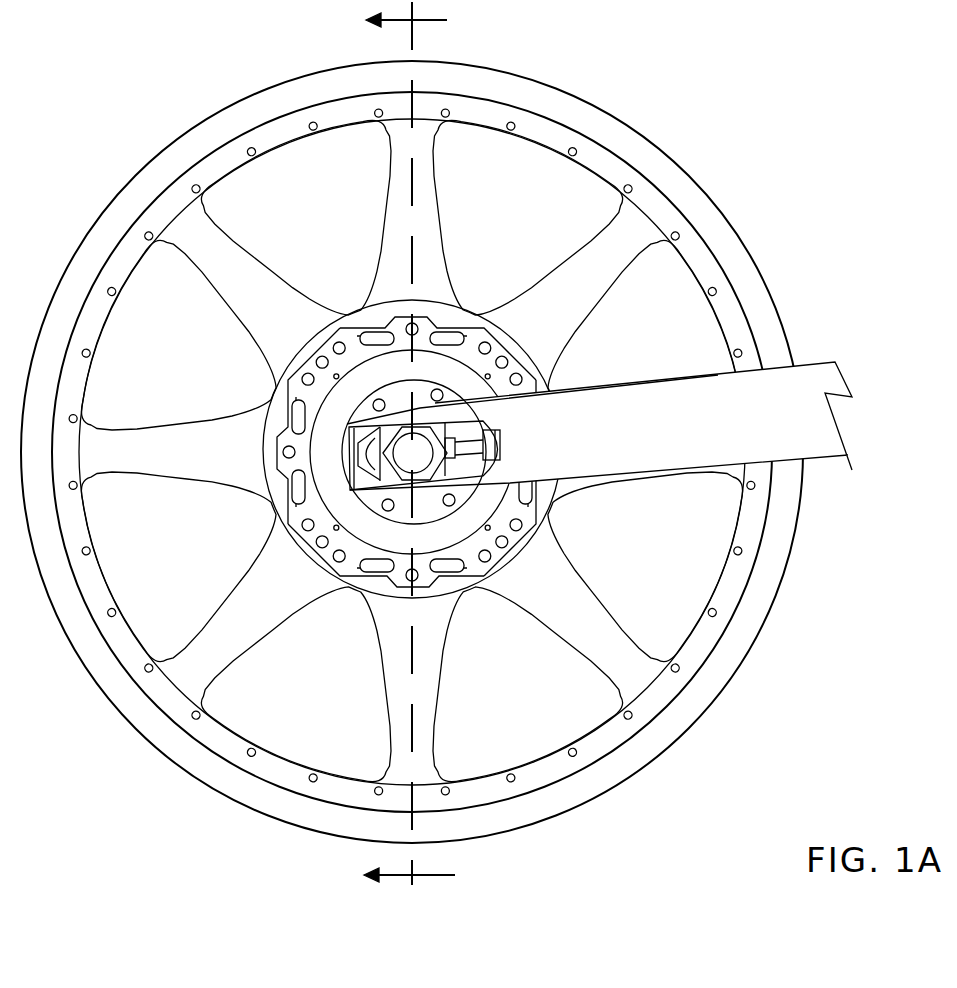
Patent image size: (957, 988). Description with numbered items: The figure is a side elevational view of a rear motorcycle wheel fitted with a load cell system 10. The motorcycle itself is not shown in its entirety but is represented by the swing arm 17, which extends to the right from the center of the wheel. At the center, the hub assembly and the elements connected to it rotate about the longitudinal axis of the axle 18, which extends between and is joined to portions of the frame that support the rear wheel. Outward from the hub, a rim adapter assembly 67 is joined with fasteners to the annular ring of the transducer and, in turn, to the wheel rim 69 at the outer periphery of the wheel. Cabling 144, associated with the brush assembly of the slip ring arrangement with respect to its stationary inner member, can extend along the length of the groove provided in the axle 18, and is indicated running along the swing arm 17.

The load cell system 10 is at (450, 449).
The swing arm 17 is at (613, 358).
The axle 18 is at (571, 476).
The rim adapter assembly 67 is at (467, 208).
The wheel rim 69 is at (652, 188).
The cabling 144 is at (636, 383).